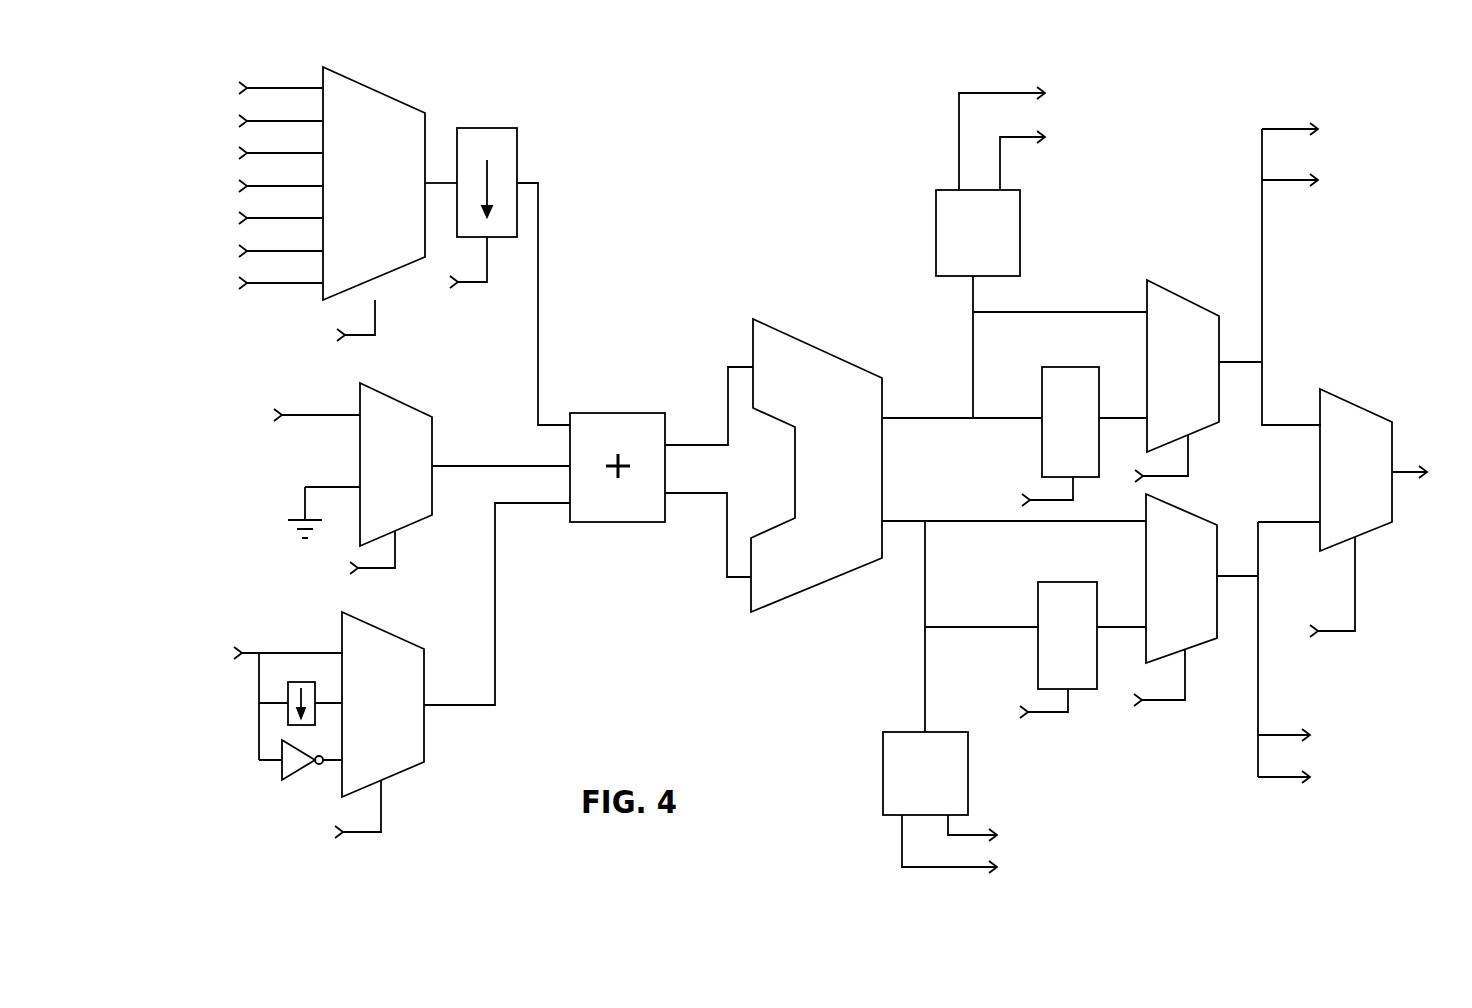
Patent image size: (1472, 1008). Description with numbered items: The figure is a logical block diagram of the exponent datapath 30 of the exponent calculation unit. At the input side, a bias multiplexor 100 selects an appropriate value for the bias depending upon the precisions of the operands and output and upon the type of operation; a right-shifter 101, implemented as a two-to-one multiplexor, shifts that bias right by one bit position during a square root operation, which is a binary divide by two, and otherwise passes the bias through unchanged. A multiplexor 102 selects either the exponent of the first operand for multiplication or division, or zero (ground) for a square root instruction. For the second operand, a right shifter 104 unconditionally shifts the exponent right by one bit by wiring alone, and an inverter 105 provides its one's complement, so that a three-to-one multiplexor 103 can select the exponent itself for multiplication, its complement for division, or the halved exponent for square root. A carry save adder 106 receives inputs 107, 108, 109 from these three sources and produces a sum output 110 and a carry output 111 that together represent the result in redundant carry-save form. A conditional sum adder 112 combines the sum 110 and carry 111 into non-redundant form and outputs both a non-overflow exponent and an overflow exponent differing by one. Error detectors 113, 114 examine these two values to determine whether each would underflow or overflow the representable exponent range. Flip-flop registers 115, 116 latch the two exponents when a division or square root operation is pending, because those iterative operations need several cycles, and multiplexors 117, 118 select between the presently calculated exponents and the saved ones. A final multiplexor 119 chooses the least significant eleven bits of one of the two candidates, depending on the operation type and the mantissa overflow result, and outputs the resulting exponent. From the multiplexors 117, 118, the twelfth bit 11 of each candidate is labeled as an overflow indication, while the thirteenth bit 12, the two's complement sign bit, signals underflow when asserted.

The exponent datapath 30 is at (648, 666).
The bias multiplexor 100 is at (385, 90).
The right-shifter 101 is at (488, 128).
The multiplexor 102 is at (408, 402).
The 3-to-1 multiplexor 103 is at (319, 713).
The right shifter 104 is at (305, 682).
The inverter 105 is at (302, 780).
The carry save adder 106 is at (617, 413).
The input 107 is at (538, 355).
The input 108 is at (480, 466).
The input 109 is at (530, 503).
The sum output 110 is at (697, 445).
The carry output 111 is at (693, 493).
The conditional sum adder 112 is at (817, 345).
The error detector 113 is at (935, 243).
The error detector 114 is at (882, 780).
The flip-flop register 115 is at (1040, 397).
The flip-flop register 116 is at (1037, 608).
The multiplexor 117 is at (1190, 300).
The multiplexor 118 is at (1198, 514).
The multiplexor 119 is at (1357, 403).
The twelfth bit 11 is at (1329, 448).
The thirteenth bit 12 is at (1330, 443).